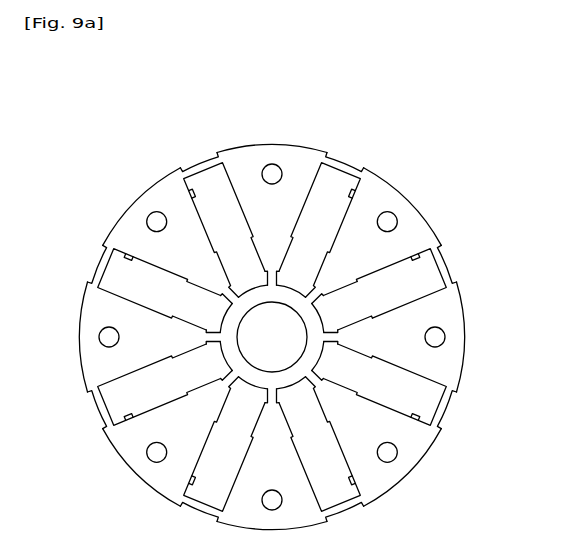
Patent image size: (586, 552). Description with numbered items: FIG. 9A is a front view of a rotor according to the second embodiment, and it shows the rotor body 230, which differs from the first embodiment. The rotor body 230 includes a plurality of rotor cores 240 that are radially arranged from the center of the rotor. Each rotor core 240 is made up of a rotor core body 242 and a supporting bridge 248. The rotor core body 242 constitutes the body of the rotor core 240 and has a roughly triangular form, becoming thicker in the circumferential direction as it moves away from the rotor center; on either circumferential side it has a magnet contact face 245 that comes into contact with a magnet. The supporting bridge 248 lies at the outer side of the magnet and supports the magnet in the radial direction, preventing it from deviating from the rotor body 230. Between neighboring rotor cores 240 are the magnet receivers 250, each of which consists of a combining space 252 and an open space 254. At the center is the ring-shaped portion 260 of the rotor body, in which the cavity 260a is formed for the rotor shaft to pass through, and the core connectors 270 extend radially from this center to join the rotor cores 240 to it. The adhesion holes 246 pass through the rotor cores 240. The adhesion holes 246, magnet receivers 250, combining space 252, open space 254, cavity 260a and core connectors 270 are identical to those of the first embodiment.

The rotor body 230 is at (140, 74).
The rotor core 240 is at (243, 139).
The rotor core body 242 is at (272, 153).
The magnet contact face 245 is at (188, 196).
The adhesion hole 246 is at (357, 191).
The supporting bridge 248 is at (343, 166).
The magnet receiver 250 is at (506, 280).
The combining space 252 is at (373, 298).
The open space 254 is at (325, 322).
The inner core portion (hub) 260 is at (252, 298).
The cavity 260a is at (259, 349).
The core connector 270 is at (226, 297).